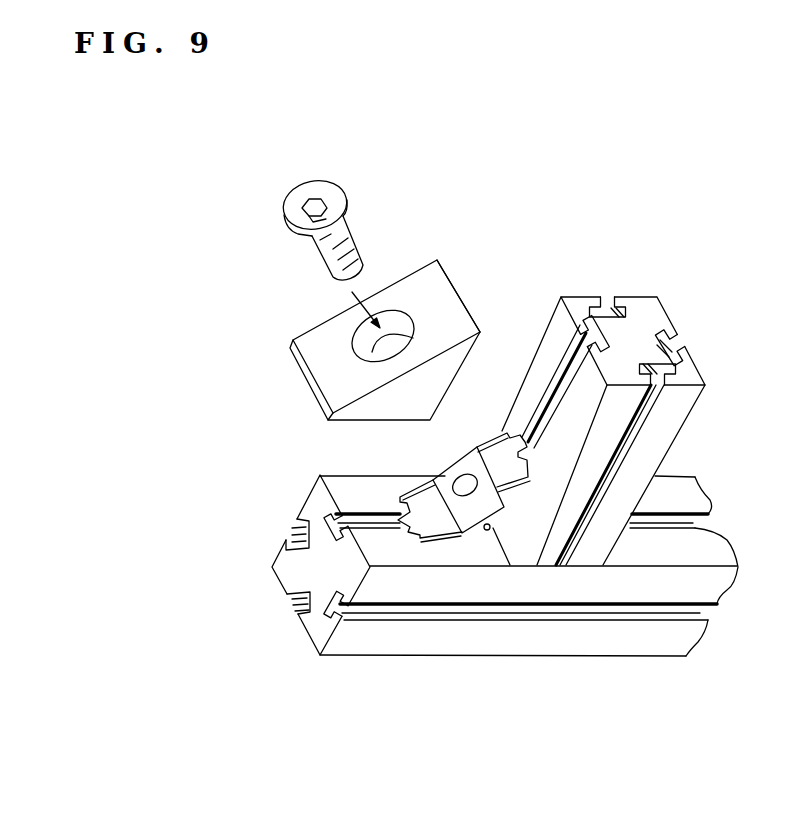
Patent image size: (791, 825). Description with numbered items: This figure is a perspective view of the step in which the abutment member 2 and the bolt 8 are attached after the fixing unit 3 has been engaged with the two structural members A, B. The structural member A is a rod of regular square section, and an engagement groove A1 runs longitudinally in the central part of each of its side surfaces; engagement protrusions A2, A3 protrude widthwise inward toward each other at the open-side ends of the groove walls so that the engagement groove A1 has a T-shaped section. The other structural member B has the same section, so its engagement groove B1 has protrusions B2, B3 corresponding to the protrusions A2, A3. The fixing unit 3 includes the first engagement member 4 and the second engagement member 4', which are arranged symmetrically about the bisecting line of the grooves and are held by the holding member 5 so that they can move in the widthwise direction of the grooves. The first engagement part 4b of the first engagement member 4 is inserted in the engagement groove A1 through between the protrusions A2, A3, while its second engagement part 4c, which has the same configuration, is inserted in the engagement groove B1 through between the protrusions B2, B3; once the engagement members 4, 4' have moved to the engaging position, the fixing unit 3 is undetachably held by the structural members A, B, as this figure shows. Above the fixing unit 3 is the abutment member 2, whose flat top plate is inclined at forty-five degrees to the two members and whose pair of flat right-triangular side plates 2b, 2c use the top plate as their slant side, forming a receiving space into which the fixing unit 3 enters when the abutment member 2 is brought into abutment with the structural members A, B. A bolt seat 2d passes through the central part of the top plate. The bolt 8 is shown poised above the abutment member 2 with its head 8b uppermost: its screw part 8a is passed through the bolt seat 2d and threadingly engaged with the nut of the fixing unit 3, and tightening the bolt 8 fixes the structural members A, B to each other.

The bolt 8 is at (332, 225).
The screw part 8a is at (348, 232).
The head of bolt 8b is at (293, 207).
The abutment member 2 is at (368, 347).
The side plate 2b is at (321, 334).
The side plate 2c is at (388, 410).
The bolt seat 2d is at (358, 344).
The fixing unit 3 is at (510, 519).
The first engagement member 4 is at (510, 519).
The first engagement part 4b is at (403, 532).
The second engagement part 4c is at (519, 444).
The second engagement member 4' is at (557, 597).
The holding member 5 is at (447, 480).
The structural member A is at (483, 584).
The engagement groove A1 is at (300, 522).
The engagement protrusion A2 is at (337, 508).
The engagement protrusion A3 is at (337, 614).
The structural member B is at (628, 398).
The engagement groove B1 is at (608, 296).
The protrusion B2 is at (606, 298).
The protrusion B3 is at (562, 362).